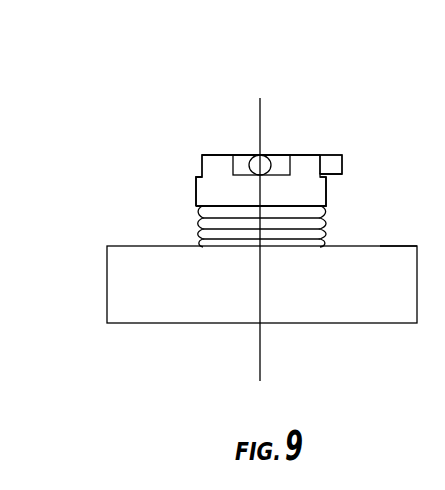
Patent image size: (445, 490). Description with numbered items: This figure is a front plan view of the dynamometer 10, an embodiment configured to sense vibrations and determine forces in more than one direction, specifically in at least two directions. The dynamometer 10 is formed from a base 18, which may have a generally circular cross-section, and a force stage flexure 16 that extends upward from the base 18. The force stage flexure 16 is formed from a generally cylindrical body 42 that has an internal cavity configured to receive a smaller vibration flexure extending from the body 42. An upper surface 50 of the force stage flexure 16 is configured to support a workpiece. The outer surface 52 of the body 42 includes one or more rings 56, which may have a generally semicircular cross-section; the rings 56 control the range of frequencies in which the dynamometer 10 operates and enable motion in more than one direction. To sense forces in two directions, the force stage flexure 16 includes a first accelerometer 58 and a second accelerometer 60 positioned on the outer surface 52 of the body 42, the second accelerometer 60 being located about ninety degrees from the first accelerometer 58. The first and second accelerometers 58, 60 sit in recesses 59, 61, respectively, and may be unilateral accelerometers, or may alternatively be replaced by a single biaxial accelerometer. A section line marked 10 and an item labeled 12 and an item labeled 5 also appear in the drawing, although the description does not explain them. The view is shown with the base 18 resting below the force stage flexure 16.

The wafer 5 is at (412, 250).
The dynamometer 10 is at (260, 98).
The probe assembly 12 is at (352, 177).
The force stage flexure 16 is at (328, 196).
The base 18 is at (107, 285).
The body 42 is at (197, 188).
The upper surface 50 is at (308, 155).
The outer surface 52 is at (203, 224).
The rings 56 is at (203, 212).
The first accelerometer 58 is at (266, 153).
The recess 59 is at (243, 153).
The second accelerometer 60 is at (340, 153).
The recess 61 is at (344, 173).